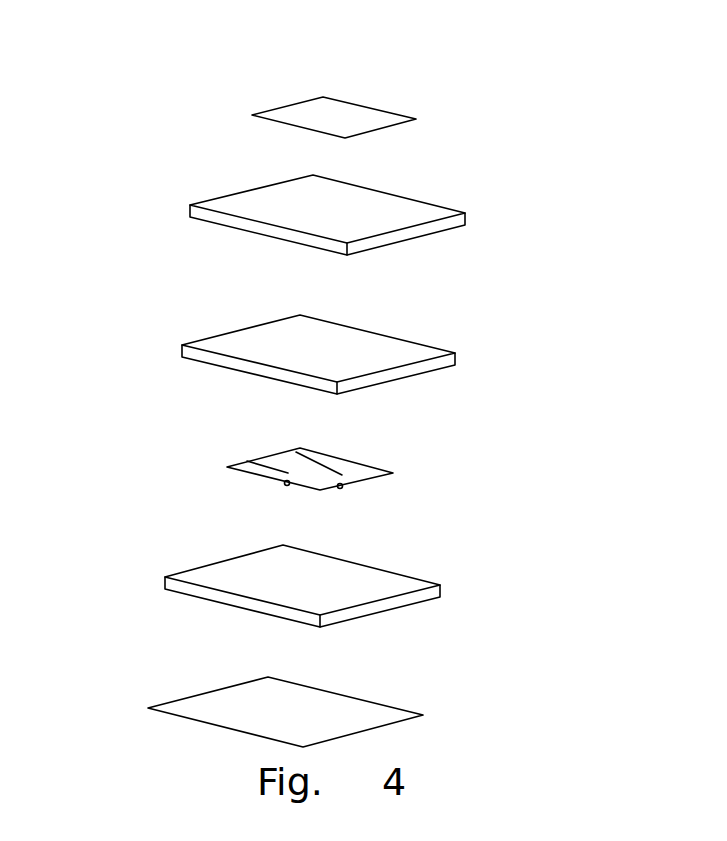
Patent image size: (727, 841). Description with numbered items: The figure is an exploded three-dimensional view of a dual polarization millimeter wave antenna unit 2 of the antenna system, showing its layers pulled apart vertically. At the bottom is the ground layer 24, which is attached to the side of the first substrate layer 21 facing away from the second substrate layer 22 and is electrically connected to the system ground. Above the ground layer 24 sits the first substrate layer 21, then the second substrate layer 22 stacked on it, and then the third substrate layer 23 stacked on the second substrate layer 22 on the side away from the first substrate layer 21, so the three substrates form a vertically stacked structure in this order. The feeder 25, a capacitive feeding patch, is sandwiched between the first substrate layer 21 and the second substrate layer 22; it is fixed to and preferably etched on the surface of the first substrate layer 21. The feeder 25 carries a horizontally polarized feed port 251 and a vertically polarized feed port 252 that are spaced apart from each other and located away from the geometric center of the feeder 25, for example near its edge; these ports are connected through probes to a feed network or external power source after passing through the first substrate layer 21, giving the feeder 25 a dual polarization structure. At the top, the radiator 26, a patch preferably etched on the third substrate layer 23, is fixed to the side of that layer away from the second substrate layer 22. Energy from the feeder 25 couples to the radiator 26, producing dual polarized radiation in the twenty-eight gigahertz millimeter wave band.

The dual polarization millimeter wave antenna unit 2 is at (218, 67).
The first substrate layer 21 is at (328, 588).
The second substrate layer 22 is at (338, 353).
The third substrate layer 23 is at (343, 209).
The ground layer 24 is at (320, 714).
The feeder 25 is at (360, 467).
The horizontally polarized feed port 251 is at (296, 452).
The vertically polarized feed port 252 is at (247, 461).
The radiator 26 is at (342, 120).